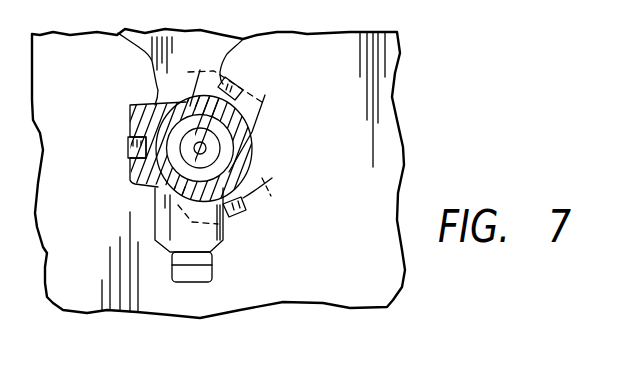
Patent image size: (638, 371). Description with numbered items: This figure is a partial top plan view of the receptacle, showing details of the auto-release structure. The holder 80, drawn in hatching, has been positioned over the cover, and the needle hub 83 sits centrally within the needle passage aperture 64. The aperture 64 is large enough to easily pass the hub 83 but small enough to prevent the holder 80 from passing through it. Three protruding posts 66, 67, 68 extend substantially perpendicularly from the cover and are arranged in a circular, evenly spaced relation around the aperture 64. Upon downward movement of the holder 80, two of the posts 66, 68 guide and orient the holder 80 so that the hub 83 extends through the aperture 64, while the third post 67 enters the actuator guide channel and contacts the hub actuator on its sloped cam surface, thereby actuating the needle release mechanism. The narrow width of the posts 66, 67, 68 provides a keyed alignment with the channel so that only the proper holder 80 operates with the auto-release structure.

The holder 80 is at (130, 107).
The hub 83 is at (248, 160).
The needle passage aperture 64 is at (236, 144).
The protruding post 67 is at (128, 148).
The protruding post 68 is at (238, 78).
The protruding post 66 is at (240, 217).